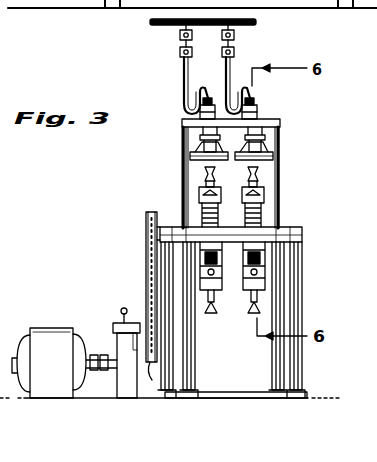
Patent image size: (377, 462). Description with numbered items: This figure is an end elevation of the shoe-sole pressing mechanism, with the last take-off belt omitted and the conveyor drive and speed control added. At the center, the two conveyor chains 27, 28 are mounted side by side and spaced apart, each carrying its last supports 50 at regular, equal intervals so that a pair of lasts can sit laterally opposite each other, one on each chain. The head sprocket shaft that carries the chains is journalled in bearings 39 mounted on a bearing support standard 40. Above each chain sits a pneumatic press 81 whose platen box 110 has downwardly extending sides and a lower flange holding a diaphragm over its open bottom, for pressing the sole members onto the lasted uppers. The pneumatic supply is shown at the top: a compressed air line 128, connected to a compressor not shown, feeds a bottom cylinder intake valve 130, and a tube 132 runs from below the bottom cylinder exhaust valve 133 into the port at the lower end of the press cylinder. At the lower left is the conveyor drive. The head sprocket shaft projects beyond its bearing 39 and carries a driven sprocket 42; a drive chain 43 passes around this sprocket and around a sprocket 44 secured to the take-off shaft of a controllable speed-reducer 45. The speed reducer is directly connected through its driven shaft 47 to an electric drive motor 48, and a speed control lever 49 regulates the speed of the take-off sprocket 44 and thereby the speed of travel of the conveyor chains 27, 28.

The compressed air line 128 is at (256, 22).
The bottom cylinder intake valve 130 is at (180, 36).
The bottom cylinder exhaust valve 133 is at (180, 53).
The tube 132 is at (226, 70).
The pneumatic press 81 is at (200, 114).
The platen box 110 is at (190, 148).
The conveyor chain 27 is at (199, 195).
The conveyor chain 28 is at (264, 200).
The last support 50 is at (232, 182).
The bearing 39 is at (176, 218).
The bearing support standard 40 is at (302, 373).
The driven sprocket 42 is at (146, 215).
The drive chain 43 is at (146, 268).
The sprocket 44 is at (153, 376).
The electric drive motor 48 is at (52, 328).
The driven shaft 47 is at (100, 355).
The controllable speed-reducer 45 is at (113, 330).
The speed control lever 49 is at (124, 308).